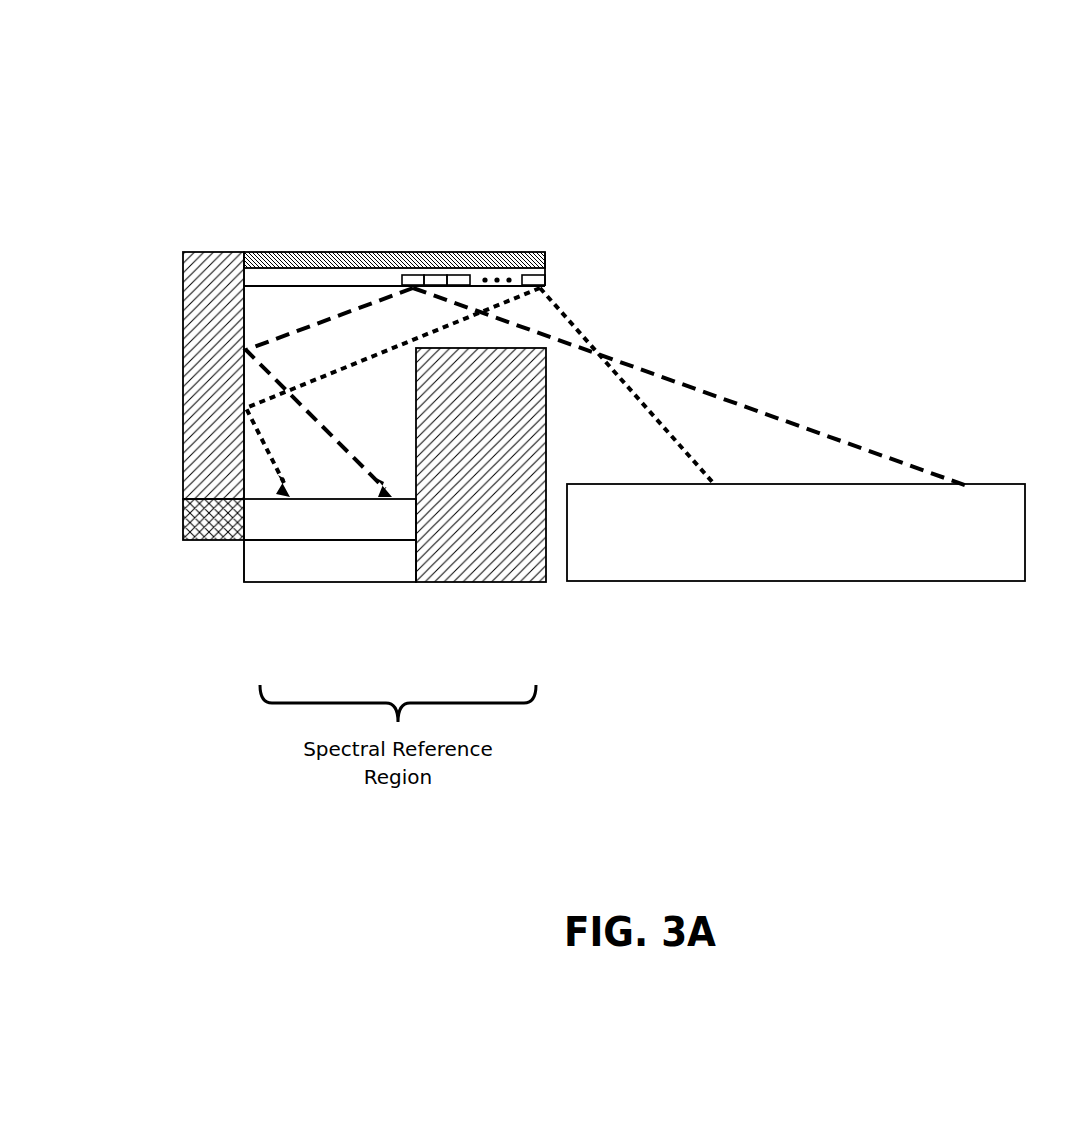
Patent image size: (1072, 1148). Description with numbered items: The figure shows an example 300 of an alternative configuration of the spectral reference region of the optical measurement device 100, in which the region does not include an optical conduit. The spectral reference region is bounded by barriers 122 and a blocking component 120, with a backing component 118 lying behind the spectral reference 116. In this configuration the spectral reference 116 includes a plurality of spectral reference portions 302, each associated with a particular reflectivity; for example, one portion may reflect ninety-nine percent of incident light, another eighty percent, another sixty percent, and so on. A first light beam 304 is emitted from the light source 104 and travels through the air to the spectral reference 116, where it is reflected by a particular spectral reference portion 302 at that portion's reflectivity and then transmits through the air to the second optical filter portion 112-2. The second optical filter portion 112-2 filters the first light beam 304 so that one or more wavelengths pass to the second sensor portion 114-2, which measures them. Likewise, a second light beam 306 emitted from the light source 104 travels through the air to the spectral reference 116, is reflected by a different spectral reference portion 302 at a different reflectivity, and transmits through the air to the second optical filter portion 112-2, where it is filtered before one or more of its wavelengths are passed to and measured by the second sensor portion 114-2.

The example 300 is at (146, 72).
The optical measurement device 100 is at (163, 297).
The barriers 122 is at (208, 299).
The blocking component 120 is at (217, 543).
The backing component 118 is at (403, 251).
The spectral reference 116 is at (352, 282).
The spectral reference portions 302 is at (419, 272).
The first light beam 304 is at (694, 387).
The second light beam 306 is at (694, 461).
The light source 104 is at (796, 532).
The second optical filter portion 112-2 is at (330, 519).
The second sensor portion 114-2 is at (330, 561).